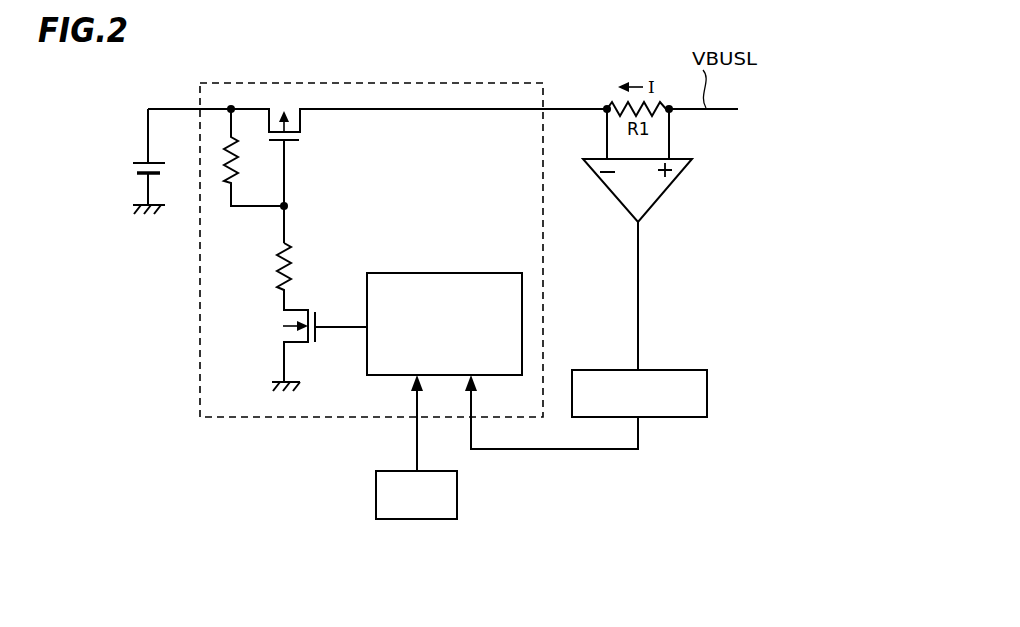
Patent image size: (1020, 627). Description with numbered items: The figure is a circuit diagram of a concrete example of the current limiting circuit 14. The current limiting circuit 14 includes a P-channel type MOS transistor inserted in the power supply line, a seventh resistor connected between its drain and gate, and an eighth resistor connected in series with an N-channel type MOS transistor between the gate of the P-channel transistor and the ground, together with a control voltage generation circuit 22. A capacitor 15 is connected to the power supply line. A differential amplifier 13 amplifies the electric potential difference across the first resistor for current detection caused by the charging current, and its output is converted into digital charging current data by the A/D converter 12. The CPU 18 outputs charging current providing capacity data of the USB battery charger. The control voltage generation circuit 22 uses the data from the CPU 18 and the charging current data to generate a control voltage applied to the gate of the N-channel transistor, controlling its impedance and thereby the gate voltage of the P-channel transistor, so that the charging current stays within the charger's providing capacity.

The A/D converter 12 is at (707, 383).
The differential amplifier 13 is at (656, 192).
The current limiting circuit 14 is at (243, 418).
The capacitor 15 is at (130, 166).
The CPU 18 is at (457, 490).
The control voltage generation circuit 22 is at (437, 273).